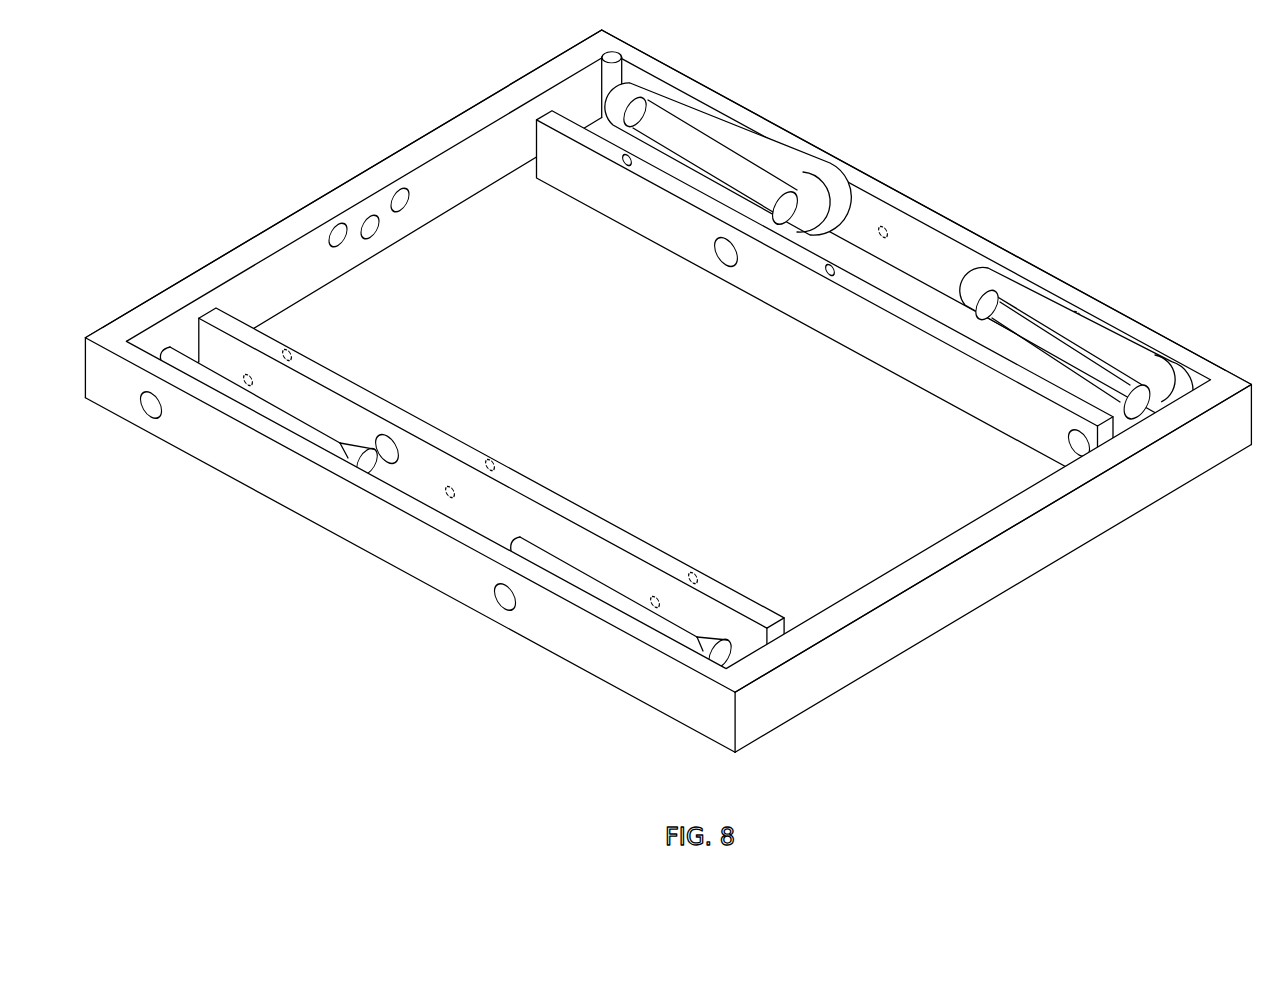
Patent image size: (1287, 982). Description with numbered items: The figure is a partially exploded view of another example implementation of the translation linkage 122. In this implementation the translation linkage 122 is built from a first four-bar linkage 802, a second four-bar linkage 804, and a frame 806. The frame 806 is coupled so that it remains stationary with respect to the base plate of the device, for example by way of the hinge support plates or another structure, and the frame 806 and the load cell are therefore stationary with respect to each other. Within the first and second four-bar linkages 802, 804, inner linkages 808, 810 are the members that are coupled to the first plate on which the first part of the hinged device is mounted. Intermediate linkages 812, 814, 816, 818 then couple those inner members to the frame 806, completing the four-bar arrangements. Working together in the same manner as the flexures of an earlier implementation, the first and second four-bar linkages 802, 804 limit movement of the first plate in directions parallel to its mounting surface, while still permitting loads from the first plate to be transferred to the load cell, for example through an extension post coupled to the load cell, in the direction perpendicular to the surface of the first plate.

The translation linkage 122 is at (668, 391).
The first four-bar linkage 802 is at (916, 279).
The second four-bar linkage 804 is at (392, 269).
The frame 806 is at (347, 185).
The inner linkage 808 is at (981, 562).
The inner linkage 810 is at (491, 497).
The intermediate linkage 812 is at (732, 156).
The intermediate linkage 814 is at (1082, 344).
The intermediate linkage 816 is at (268, 438).
The intermediate linkage 818 is at (621, 628).